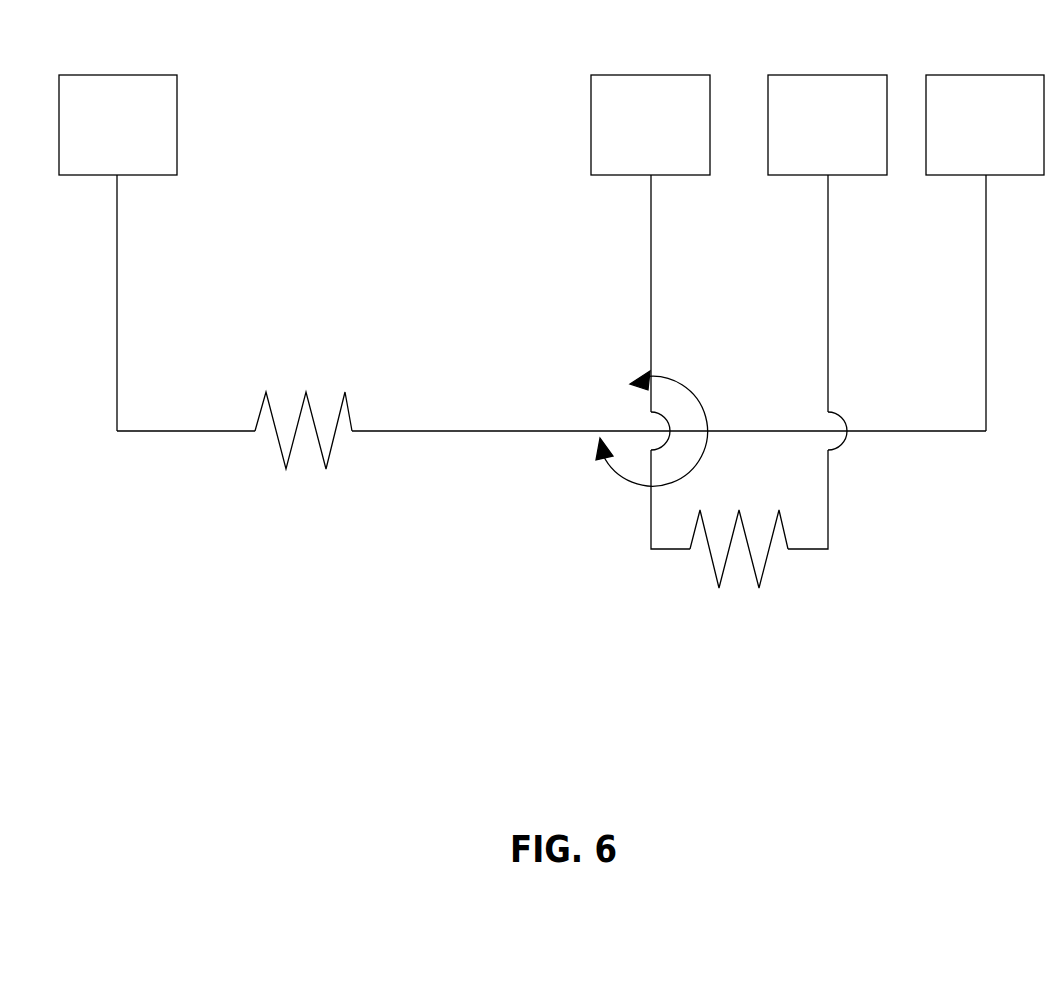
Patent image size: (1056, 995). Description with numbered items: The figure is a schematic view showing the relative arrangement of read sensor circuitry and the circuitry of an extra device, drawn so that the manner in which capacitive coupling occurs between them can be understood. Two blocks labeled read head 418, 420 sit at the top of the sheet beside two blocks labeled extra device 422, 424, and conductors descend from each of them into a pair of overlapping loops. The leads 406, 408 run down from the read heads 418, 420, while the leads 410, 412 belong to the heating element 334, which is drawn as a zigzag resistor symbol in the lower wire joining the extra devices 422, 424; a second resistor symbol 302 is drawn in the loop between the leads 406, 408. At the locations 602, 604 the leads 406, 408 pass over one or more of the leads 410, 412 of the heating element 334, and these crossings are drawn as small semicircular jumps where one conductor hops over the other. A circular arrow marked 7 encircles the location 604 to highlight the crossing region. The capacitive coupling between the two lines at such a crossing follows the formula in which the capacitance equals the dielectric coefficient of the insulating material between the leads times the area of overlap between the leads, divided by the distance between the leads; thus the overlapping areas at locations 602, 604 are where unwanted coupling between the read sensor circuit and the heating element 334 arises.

The extra device 422 is at (134, 75).
The extra device 424 is at (1014, 75).
The read head 418 is at (687, 75).
The read head 420 is at (862, 75).
The lead of the heating element 412 is at (117, 254).
The lead 408 is at (651, 252).
The lead 406 is at (828, 259).
The lead of the heating element 410 is at (986, 258).
The heating element 334 is at (279, 447).
The resistor 302 is at (706, 565).
The location 604 is at (658, 410).
The location 602 is at (832, 412).
The current loop direction 7 is at (652, 428).